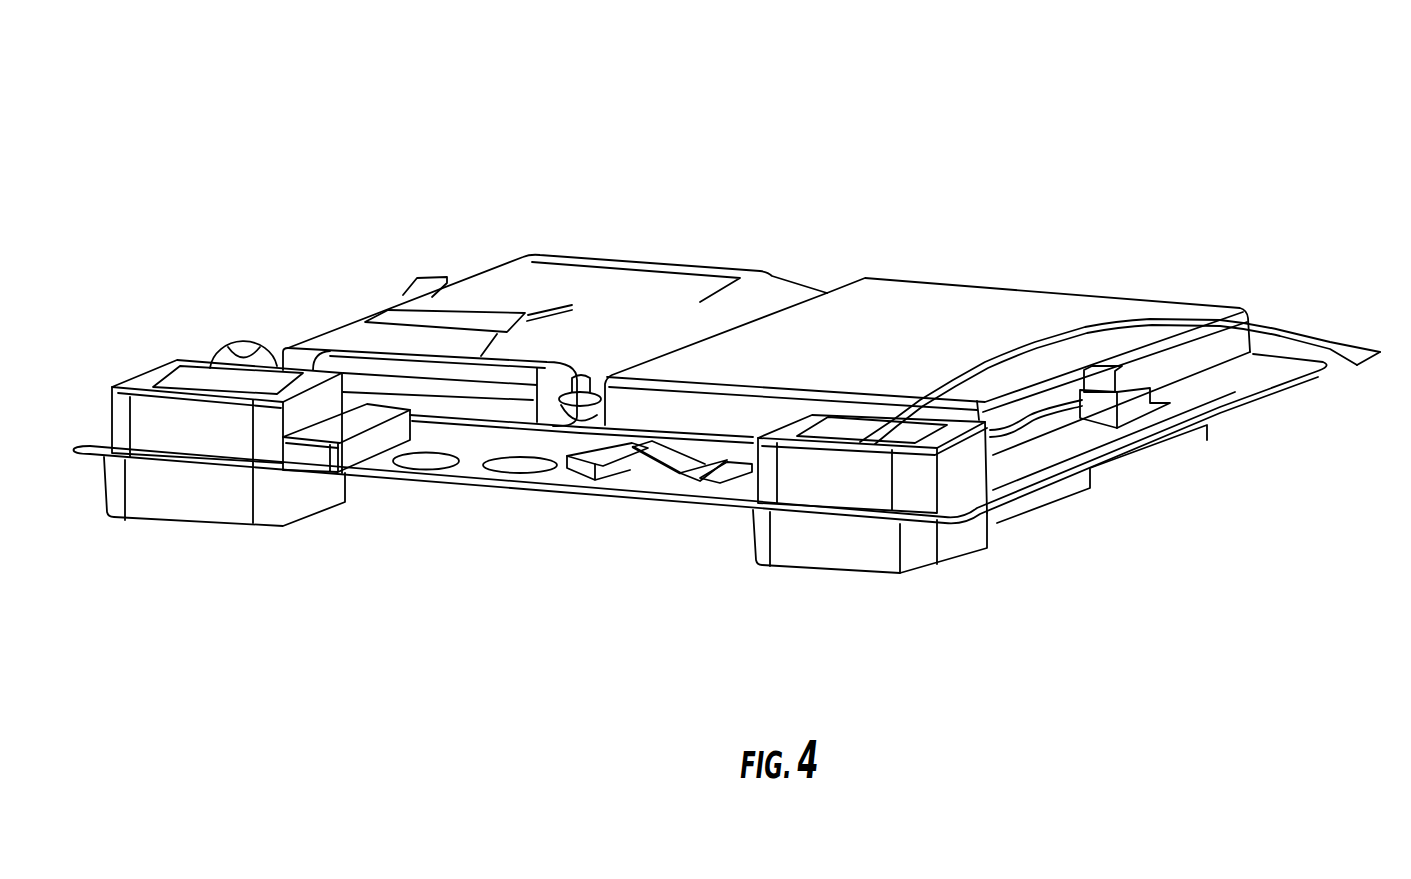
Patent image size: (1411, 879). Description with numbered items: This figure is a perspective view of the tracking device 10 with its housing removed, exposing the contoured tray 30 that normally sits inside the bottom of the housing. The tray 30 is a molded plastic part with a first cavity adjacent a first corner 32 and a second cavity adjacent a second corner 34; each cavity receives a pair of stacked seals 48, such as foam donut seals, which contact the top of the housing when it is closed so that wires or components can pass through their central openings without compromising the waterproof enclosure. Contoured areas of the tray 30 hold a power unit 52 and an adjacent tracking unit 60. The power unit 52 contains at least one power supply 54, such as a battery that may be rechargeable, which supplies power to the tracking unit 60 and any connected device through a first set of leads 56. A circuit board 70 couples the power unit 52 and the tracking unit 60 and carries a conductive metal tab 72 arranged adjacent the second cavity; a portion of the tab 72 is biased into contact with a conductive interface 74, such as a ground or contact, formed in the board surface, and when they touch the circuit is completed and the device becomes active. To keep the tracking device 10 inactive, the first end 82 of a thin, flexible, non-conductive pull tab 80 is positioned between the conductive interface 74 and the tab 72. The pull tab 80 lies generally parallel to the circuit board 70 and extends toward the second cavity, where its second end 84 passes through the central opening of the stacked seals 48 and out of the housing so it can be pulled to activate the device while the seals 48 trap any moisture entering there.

The tracking device 10 is at (276, 143).
The tray 30 is at (1132, 496).
The first corner 32 is at (88, 448).
The second corner 34 is at (905, 556).
The stacked seals 48 is at (143, 408).
The power unit 52 is at (1210, 249).
The power supply 54 is at (990, 300).
The first set of leads 56 is at (588, 394).
The tracking unit 60 is at (528, 263).
The circuit board 70 is at (633, 484).
The tab 72 is at (680, 471).
The conductive interface 74 is at (712, 478).
The pull tab 80 is at (1163, 316).
The first end 82 is at (720, 481).
The second end 84 is at (1358, 352).